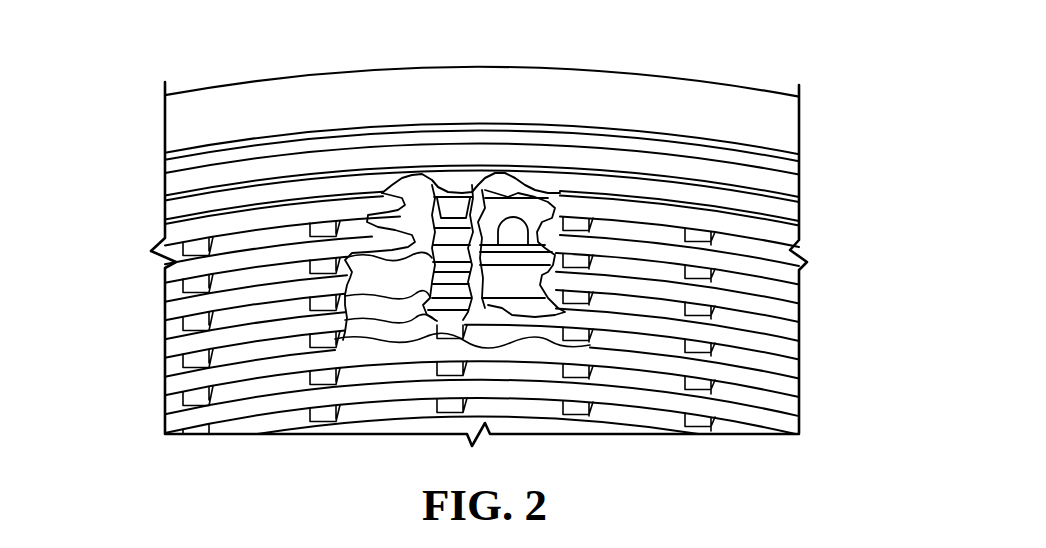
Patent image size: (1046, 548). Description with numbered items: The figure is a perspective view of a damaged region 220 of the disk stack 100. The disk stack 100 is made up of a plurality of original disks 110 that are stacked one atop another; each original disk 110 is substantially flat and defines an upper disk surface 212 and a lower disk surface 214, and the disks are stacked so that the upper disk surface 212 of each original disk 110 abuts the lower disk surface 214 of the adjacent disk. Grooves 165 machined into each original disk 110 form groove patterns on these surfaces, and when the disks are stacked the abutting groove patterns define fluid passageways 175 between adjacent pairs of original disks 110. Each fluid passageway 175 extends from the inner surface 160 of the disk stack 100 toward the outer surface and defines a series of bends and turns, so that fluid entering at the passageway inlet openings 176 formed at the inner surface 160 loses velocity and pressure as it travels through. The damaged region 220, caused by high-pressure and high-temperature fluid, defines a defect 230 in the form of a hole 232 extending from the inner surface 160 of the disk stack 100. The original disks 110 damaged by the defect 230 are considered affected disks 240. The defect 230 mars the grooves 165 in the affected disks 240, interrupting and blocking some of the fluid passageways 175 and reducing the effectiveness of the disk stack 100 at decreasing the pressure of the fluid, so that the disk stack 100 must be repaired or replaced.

The disk stack 100 is at (858, 147).
The original disks 110 is at (197, 268).
The inner surface 160 is at (640, 360).
The grooves 165 is at (720, 355).
The fluid passageways 175 is at (668, 313).
The passageway inlet openings 176 is at (257, 363).
The upper disk surface 212 is at (232, 242).
The lower disk surface 214 is at (230, 278).
The damaged region 220 is at (616, 226).
The defect 230 is at (309, 176).
The hole 232 is at (478, 319).
The affected disks 240 is at (875, 232).